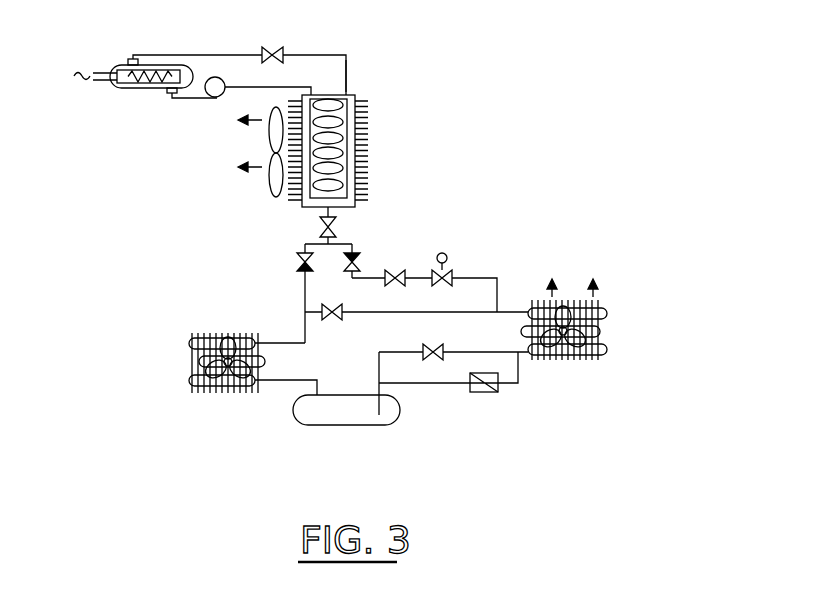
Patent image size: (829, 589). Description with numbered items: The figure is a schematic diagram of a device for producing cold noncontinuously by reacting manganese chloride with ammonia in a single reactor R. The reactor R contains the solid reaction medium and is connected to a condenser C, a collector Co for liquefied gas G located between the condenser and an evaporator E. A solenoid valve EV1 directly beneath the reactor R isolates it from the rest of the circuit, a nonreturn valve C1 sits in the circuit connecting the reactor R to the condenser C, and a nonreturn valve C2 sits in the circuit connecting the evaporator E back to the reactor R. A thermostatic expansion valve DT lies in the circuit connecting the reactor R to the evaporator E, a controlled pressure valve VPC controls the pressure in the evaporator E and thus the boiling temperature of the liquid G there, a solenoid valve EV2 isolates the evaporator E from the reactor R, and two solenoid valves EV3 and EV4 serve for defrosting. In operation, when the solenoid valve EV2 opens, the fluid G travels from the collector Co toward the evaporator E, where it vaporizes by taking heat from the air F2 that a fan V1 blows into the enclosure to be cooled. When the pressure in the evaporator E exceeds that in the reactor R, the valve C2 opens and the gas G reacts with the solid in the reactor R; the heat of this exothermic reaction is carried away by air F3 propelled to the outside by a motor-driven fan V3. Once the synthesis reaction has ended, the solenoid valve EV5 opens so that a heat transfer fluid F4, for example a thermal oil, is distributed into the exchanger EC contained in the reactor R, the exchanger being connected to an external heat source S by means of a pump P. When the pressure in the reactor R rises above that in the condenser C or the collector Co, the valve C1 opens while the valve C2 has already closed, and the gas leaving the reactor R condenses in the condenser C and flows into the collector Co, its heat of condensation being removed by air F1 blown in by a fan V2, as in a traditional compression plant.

The external heat source S is at (103, 89).
The pump P is at (214, 92).
The solenoid valve EV5 is at (278, 52).
The heat transfer fluid F4 is at (348, 82).
The exchanger EC is at (357, 144).
The reactor R is at (328, 145).
The motor-driven fan V3 is at (272, 184).
The fluid F3 is at (249, 143).
The solenoid valve EV1 is at (338, 228).
The nonreturn valve C1 is at (292, 293).
The nonreturn valve C2 is at (364, 261).
The solenoid valve EV2 is at (407, 265).
The controlled pressure valve VPC is at (447, 257).
The solenoid valve EV3 is at (344, 299).
The solenoid valve EV4 is at (445, 339).
The condenser C is at (158, 378).
The fan V2 is at (224, 382).
The fluid F1 is at (226, 320).
The collector Co is at (346, 422).
The liquefied gas G is at (346, 388).
The thermostatic expansion valve DT is at (484, 396).
The evaporator E is at (620, 341).
The fan V1 is at (565, 352).
The fluid F2 is at (572, 284).